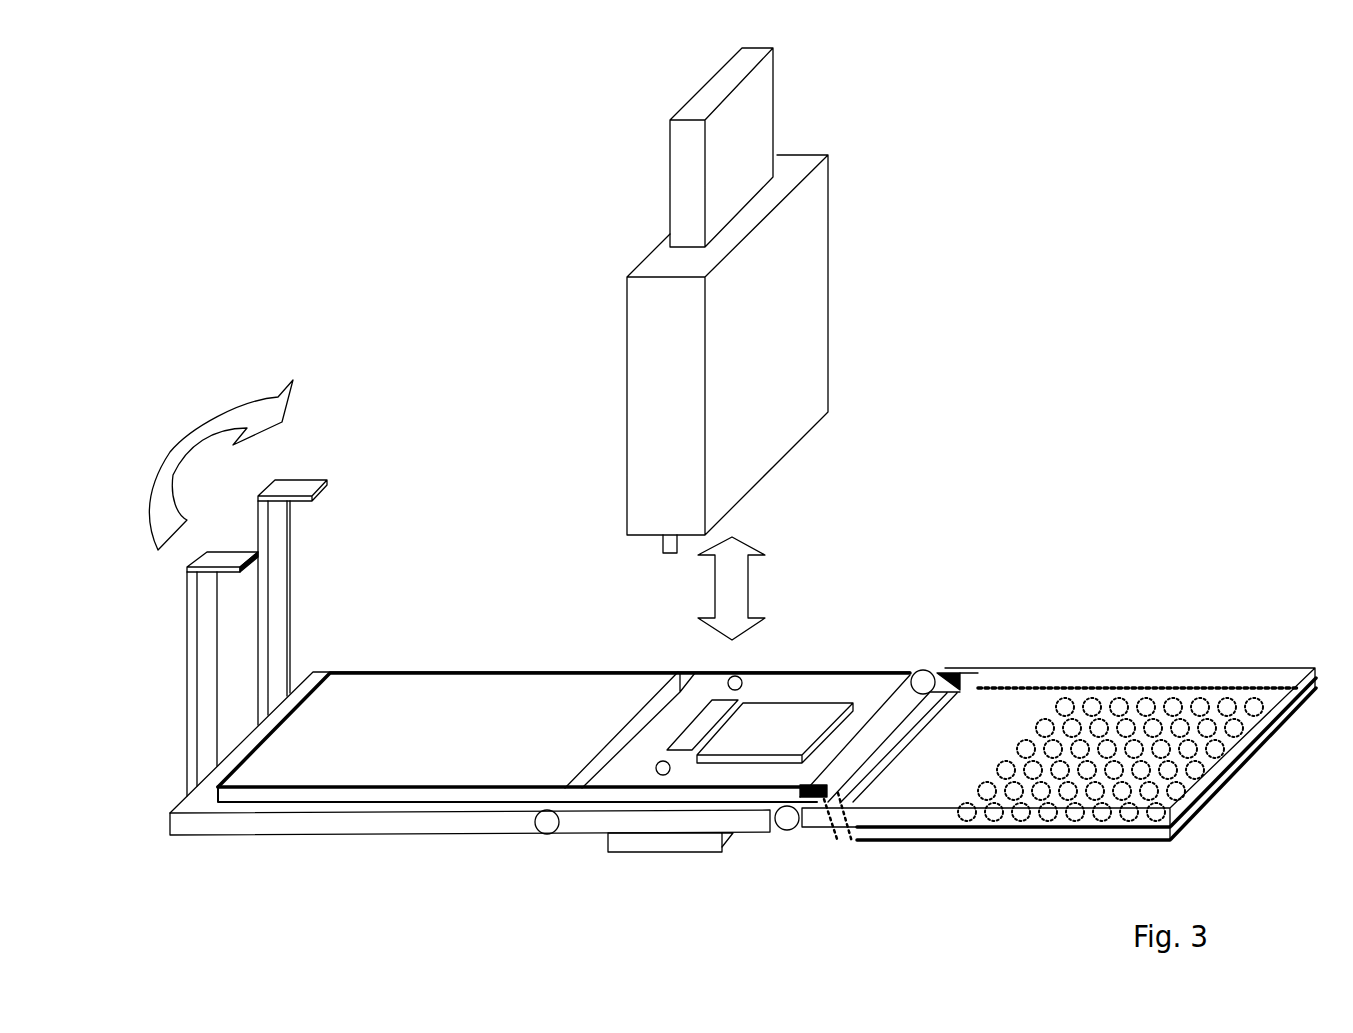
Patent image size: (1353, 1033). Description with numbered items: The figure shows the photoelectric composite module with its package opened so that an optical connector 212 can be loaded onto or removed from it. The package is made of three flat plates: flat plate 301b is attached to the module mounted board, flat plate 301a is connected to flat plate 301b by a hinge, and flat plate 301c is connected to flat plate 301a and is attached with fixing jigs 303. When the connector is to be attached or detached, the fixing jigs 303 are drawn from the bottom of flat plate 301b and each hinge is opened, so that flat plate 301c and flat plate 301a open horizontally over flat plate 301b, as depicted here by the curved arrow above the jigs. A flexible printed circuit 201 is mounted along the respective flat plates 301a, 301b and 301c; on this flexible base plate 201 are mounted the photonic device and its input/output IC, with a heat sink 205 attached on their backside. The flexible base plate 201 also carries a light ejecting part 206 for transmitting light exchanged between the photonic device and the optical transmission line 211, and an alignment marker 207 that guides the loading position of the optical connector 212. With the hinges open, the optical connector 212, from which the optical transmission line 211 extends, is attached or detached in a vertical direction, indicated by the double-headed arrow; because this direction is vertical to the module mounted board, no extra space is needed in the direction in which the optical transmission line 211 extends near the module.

The flexible printed circuit 201 is at (502, 675).
The heat sink 205 is at (607, 853).
The light ejecting part 206 is at (700, 722).
The alignment marker 207 is at (743, 687).
The optical transmission line 211 is at (777, 120).
The optical connector 212 is at (830, 307).
The flat plate 301a is at (830, 672).
The flat plate 301b is at (1060, 675).
The flat plate 301c is at (220, 825).
The fixing jigs 303 is at (207, 642).